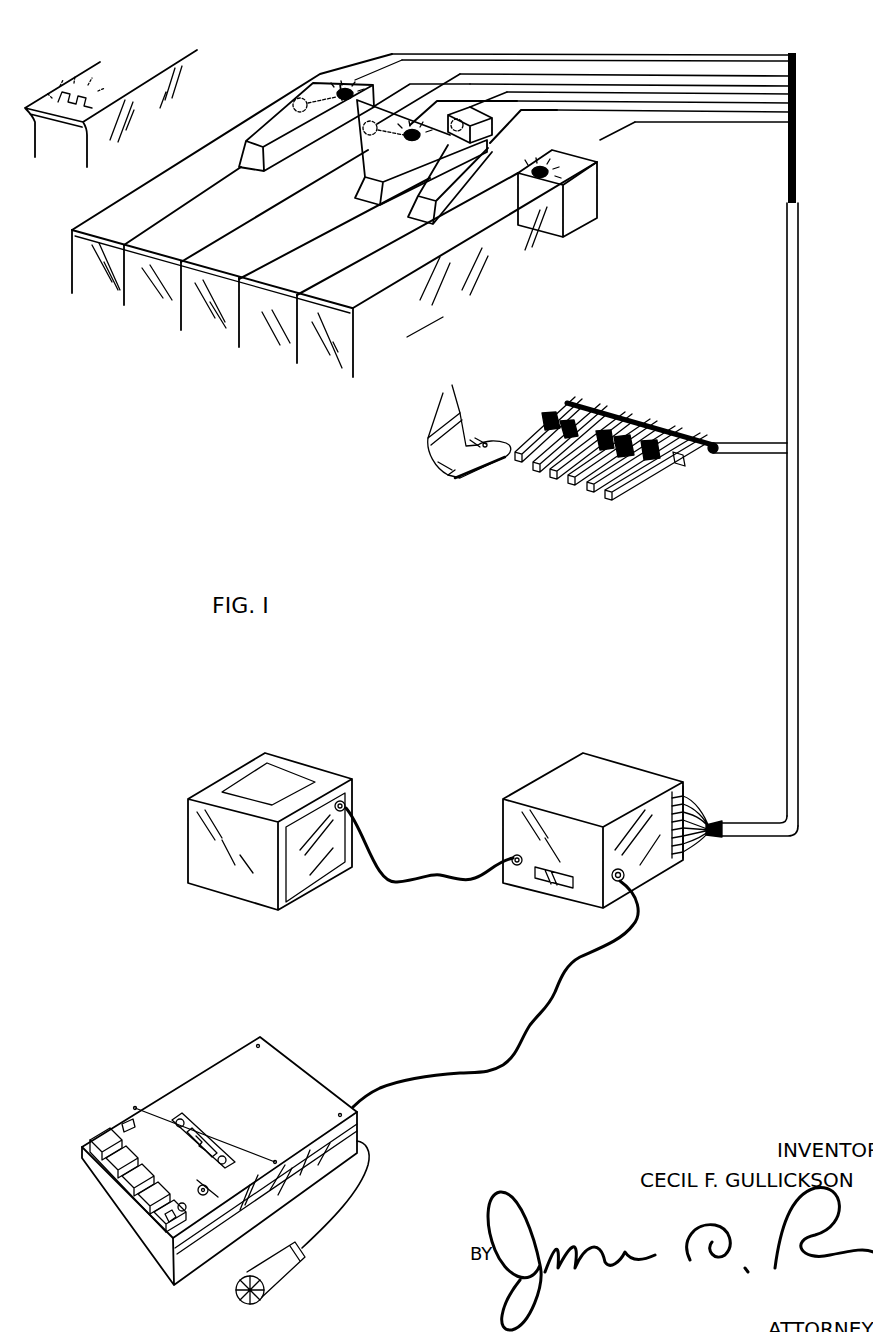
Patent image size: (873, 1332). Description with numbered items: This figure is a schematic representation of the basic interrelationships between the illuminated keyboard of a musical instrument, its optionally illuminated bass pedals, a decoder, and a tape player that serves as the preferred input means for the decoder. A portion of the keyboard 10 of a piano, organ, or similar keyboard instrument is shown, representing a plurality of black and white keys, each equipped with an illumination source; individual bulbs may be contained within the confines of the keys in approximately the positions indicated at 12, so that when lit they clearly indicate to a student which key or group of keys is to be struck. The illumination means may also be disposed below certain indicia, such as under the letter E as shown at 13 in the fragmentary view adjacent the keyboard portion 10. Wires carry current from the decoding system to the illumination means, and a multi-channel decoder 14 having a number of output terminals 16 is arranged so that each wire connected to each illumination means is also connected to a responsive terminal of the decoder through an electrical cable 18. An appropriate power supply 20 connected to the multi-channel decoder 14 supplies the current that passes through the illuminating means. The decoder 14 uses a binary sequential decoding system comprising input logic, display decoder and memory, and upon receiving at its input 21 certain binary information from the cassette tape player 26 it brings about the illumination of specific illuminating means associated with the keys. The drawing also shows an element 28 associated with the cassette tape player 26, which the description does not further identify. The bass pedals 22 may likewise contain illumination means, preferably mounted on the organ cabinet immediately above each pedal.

The keyboard 10 is at (271, 360).
The illumination source positions 12 is at (515, 150).
The indicia 13 is at (72, 92).
The multi-channel decoder 14 is at (557, 782).
The output terminals 16 is at (690, 811).
The electrical cable 18 is at (800, 553).
The power supply 20 is at (198, 852).
The input 21 is at (628, 876).
The bass pedals 22 is at (548, 478).
The cassette tape player 26 is at (225, 1070).
The microphone 28 is at (293, 1272).